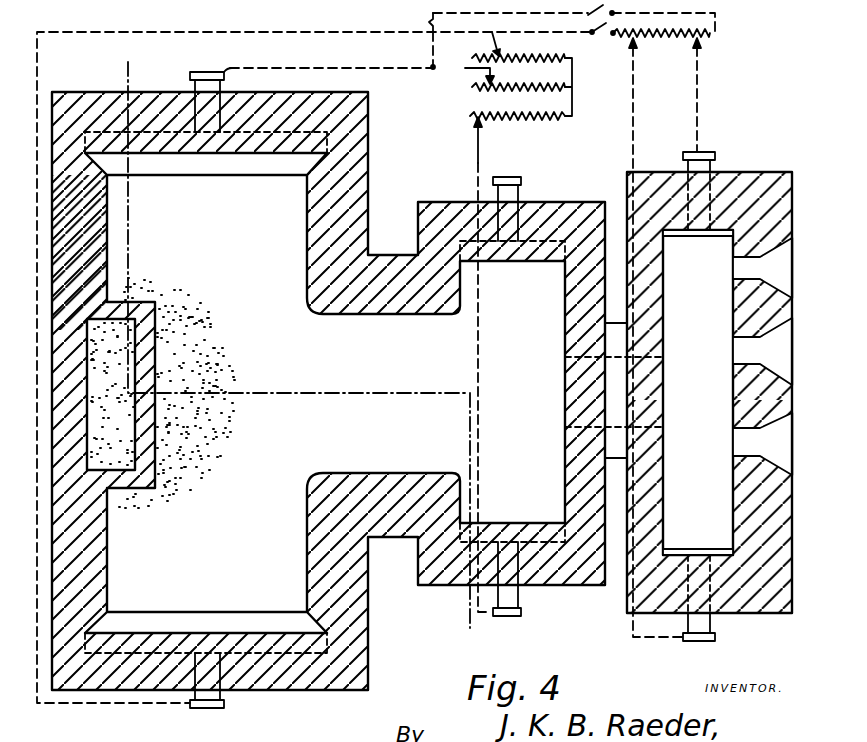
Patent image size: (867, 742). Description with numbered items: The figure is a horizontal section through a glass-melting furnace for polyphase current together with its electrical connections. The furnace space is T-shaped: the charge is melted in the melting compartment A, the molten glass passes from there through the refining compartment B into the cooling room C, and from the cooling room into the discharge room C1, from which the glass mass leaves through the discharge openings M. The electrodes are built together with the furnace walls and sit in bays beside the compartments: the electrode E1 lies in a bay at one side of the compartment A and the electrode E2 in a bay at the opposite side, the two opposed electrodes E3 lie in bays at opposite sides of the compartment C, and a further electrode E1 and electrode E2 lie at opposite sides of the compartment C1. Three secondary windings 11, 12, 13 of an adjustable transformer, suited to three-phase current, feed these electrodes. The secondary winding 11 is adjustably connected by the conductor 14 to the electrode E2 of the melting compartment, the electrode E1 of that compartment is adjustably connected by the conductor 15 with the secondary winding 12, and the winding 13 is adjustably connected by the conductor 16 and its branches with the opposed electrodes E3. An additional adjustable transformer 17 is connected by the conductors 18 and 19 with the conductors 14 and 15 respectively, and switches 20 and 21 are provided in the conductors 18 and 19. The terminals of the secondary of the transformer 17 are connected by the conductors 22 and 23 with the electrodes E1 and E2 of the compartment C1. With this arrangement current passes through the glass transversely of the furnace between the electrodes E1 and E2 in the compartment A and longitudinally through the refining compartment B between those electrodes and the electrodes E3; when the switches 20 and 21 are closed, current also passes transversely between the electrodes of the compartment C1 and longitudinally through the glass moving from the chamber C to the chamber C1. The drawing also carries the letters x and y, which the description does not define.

The secondary winding 11 is at (504, 60).
The secondary winding 12 is at (472, 92).
The secondary winding 13 is at (528, 120).
The conductor 14 is at (268, 32).
The conductor 15 is at (298, 68).
The conductor 16 is at (478, 163).
The additional adjustable transformer 17 is at (713, 39).
The conductor 18 is at (550, 45).
The conductor 19 is at (414, 36).
The switch 20 is at (602, 40).
The switch 21 is at (574, 16).
The conductor 22 is at (700, 60).
The conductor 23 is at (656, 337).
The electrode E1 is at (715, 230).
The electrode E2 is at (224, 706).
The opposed electrodes E3 is at (540, 535).
The melting compartment A is at (167, 393).
The refining compartment B is at (372, 382).
The cooling room C is at (516, 389).
The discharge room C1 is at (709, 392).
The discharge openings M is at (785, 447).
The axis x is at (295, 219).
The axis y is at (298, 326).